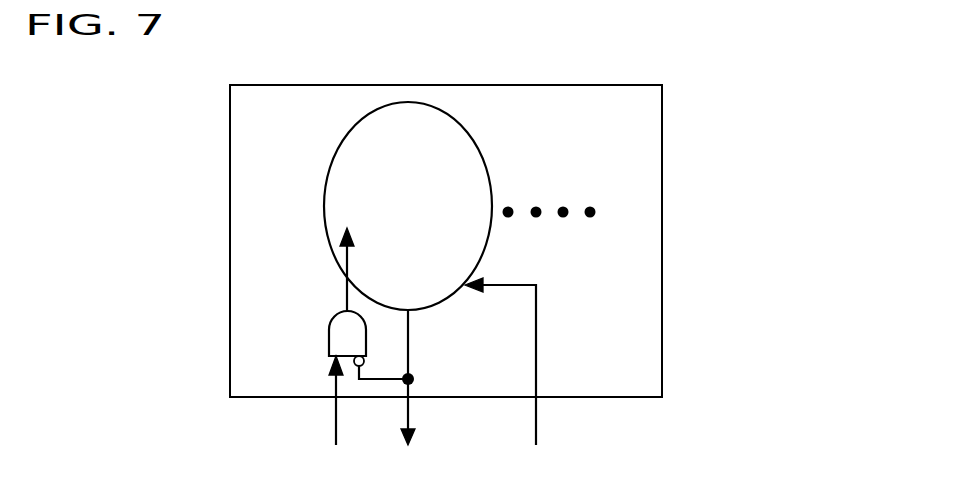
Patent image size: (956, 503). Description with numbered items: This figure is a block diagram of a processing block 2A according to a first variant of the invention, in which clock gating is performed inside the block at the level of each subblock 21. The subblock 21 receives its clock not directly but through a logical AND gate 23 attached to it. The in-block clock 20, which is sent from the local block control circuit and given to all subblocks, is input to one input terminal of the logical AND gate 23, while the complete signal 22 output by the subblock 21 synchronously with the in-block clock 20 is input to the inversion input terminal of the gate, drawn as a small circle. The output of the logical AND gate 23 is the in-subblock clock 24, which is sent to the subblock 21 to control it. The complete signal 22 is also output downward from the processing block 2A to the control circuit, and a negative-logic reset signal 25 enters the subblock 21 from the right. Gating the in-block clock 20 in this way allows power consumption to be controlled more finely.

The processing block 2A is at (312, 132).
The subblock 21 is at (430, 169).
The in-block clock 20 is at (336, 416).
The complete signal 22 is at (406, 393).
The logical AND gate 23 is at (329, 334).
The in-subblock clock 24 is at (345, 289).
The reset signal 25 is at (507, 377).